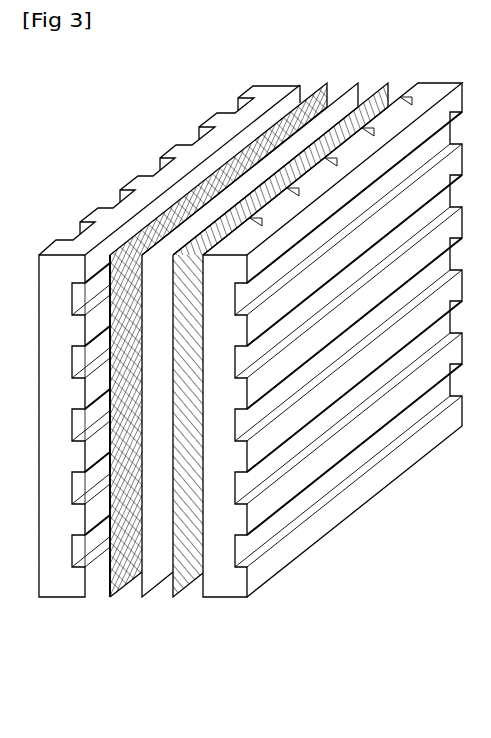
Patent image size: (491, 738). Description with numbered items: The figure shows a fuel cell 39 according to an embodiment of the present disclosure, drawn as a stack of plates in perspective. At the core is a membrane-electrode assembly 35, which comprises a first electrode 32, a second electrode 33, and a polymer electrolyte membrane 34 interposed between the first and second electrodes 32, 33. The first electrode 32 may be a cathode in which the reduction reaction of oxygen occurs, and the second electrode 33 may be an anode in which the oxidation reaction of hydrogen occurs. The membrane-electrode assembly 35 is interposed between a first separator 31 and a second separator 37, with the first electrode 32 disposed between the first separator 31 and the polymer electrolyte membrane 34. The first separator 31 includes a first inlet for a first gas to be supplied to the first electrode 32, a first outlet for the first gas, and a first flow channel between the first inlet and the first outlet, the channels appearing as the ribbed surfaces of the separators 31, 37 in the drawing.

The first separator 31 is at (65, 575).
The first electrode 32 is at (123, 575).
The second electrode 33 is at (192, 575).
The polymer electrolyte membrane 34 is at (155, 575).
The membrane-electrode assembly 35 is at (248, 383).
The second separator 37 is at (332, 383).
The fuel cell 39 is at (250, 406).